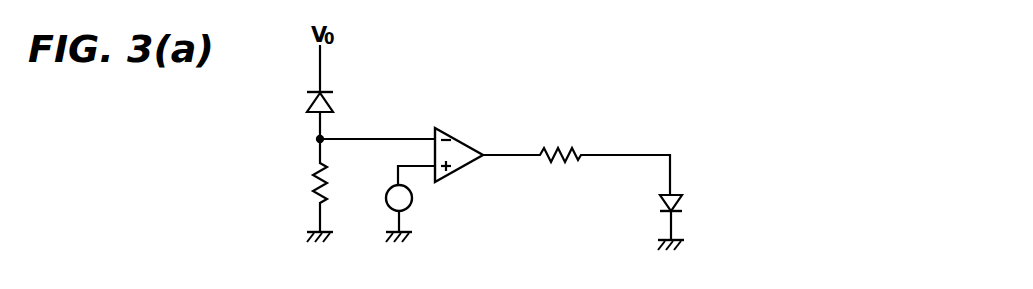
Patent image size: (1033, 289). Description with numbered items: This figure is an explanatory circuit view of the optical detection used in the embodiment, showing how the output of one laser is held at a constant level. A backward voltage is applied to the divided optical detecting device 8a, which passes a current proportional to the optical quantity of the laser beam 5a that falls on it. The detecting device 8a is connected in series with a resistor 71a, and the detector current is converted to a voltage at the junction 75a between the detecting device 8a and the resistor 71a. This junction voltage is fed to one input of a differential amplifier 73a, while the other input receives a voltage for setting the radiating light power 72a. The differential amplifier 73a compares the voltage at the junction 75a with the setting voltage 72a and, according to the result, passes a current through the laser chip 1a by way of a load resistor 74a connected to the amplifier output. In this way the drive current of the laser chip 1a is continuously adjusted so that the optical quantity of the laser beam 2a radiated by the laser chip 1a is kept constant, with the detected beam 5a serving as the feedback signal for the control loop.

The laser beam 5a is at (296, 96).
The divided optical detecting device 8a is at (334, 104).
The junction 75a is at (318, 138).
The resistor 71a is at (311, 180).
The differential amplifier 73a is at (466, 138).
The voltage for setting the radiating light power 72a is at (413, 198).
The load resistor 74a is at (563, 150).
The laser chip 1a is at (658, 202).
The laser beam 2a is at (741, 161).